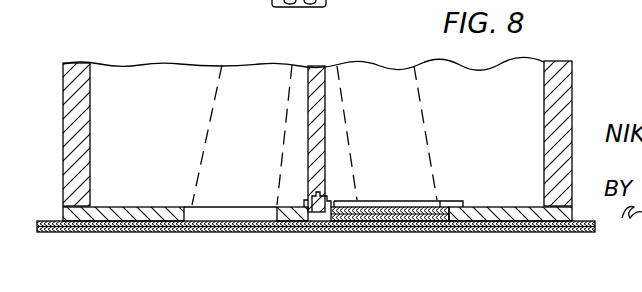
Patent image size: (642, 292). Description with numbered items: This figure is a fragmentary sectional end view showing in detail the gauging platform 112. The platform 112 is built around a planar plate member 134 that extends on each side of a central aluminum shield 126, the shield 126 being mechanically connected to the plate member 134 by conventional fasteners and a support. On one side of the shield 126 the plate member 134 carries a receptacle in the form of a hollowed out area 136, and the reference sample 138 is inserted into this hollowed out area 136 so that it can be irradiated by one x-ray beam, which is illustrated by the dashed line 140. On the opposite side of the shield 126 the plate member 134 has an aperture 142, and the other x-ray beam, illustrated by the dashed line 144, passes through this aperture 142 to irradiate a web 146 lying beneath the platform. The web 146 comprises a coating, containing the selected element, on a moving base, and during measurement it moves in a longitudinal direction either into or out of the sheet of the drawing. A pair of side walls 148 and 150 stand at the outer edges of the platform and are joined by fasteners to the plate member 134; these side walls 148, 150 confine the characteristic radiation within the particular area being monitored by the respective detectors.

The gauging platform 112 is at (362, 56).
The aluminum shield 126 is at (318, 66).
The planar plate member 134 is at (504, 207).
The hollowed out area 136 is at (449, 199).
The reference sample 138 is at (382, 213).
The dashed line 140 is at (420, 99).
The aperture 142 is at (188, 208).
The dashed line 144 is at (210, 117).
The web 146 is at (128, 232).
The side wall 148 is at (561, 76).
The side wall 150 is at (63, 107).